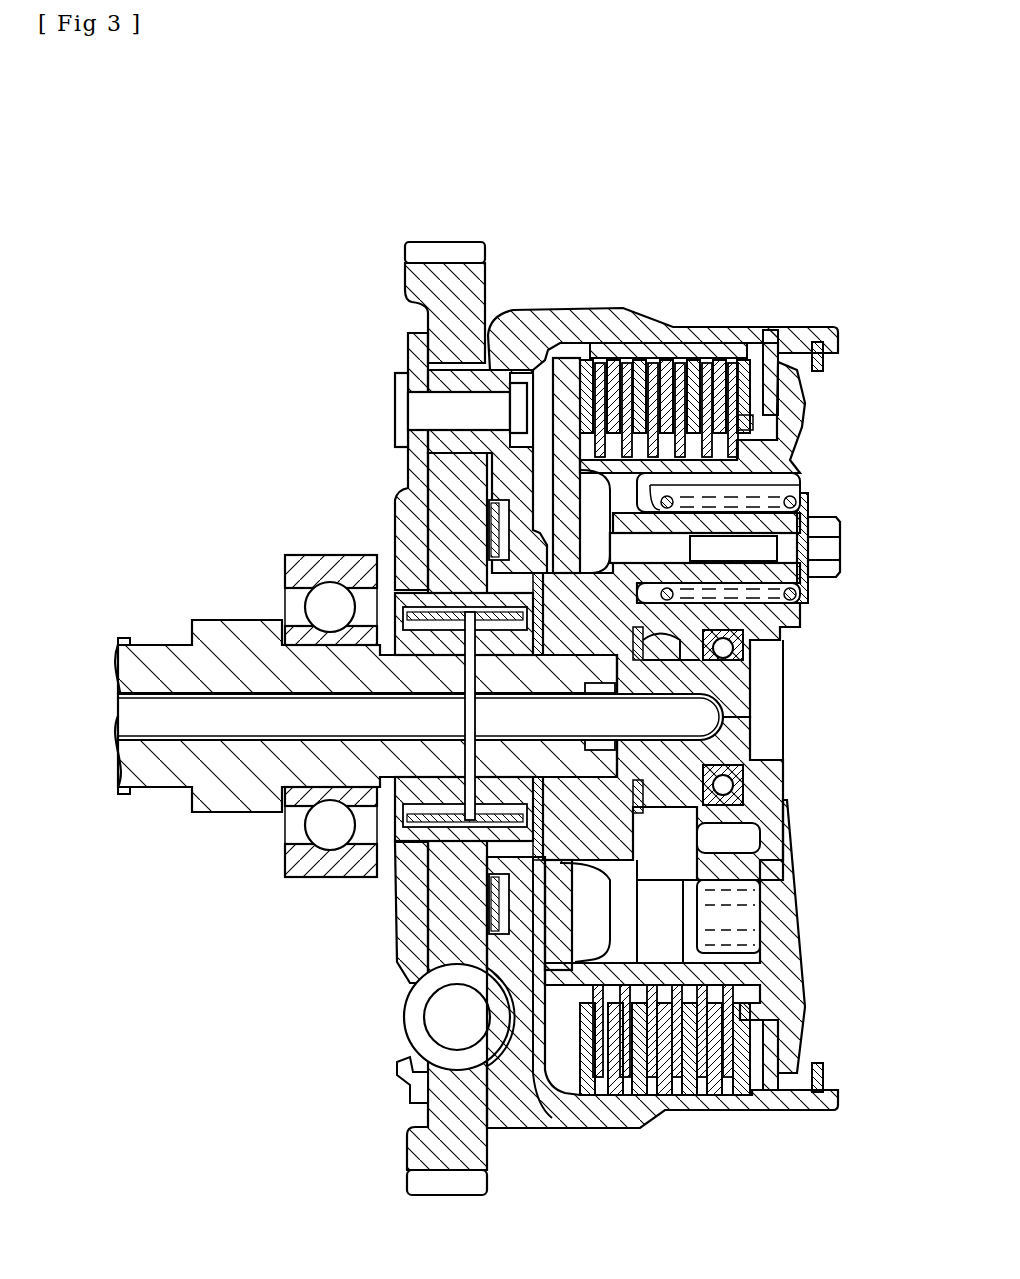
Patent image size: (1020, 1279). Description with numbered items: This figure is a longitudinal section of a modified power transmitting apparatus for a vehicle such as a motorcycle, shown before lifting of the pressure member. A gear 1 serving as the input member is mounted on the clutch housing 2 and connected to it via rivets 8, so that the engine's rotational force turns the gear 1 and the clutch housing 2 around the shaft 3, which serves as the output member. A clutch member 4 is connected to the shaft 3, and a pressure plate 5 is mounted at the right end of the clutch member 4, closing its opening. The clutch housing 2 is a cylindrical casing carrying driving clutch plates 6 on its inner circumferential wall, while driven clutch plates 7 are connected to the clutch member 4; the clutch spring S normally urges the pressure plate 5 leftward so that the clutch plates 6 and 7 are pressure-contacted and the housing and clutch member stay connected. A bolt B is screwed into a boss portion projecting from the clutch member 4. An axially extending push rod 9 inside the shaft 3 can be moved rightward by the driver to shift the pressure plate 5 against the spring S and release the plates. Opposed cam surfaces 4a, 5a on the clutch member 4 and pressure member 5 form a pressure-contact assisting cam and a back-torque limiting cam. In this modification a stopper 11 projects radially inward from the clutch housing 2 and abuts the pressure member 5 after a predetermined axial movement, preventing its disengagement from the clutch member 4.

The gear 1 is at (412, 290).
The clutch housing 2 is at (570, 318).
The shaft 3 is at (152, 664).
The clutch member 4 is at (568, 450).
The cam surface 4a is at (772, 900).
The pressure plate 5 is at (797, 412).
The cam surface 5a is at (745, 952).
The driving clutch plates 6 is at (735, 360).
The driven clutch plates 7 is at (652, 360).
The rivets 8 is at (393, 396).
The push rod 9 is at (166, 722).
The stopper 11 is at (828, 360).
The bolt B is at (832, 542).
The clutch spring S is at (765, 607).